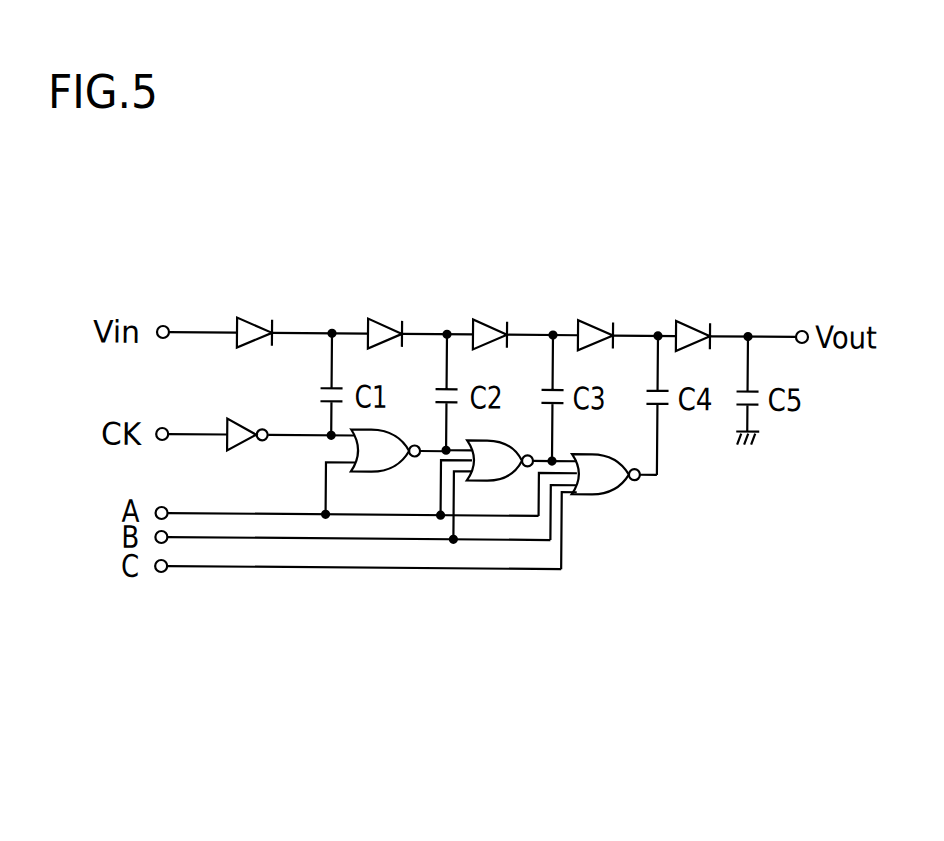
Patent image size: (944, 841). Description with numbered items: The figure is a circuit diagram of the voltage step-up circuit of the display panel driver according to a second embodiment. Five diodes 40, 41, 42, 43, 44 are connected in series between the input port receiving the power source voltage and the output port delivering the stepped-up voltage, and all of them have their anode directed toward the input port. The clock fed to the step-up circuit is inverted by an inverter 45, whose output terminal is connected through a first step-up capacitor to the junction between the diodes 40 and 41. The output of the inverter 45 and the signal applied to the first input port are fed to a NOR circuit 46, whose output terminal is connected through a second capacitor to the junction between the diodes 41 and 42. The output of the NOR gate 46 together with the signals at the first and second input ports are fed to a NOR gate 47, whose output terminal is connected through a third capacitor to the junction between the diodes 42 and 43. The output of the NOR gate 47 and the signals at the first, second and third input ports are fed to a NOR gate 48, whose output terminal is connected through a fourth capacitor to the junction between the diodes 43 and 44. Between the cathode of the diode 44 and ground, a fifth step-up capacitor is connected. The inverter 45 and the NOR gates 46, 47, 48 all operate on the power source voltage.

The diode 40 is at (255, 321).
The diode 41 is at (391, 321).
The diode 42 is at (495, 320).
The diode 43 is at (600, 321).
The diode 44 is at (694, 319).
The inverter 45 is at (243, 449).
The NOR circuit 46 is at (377, 470).
The NOR gate 47 is at (483, 479).
The NOR gate 48 is at (608, 492).